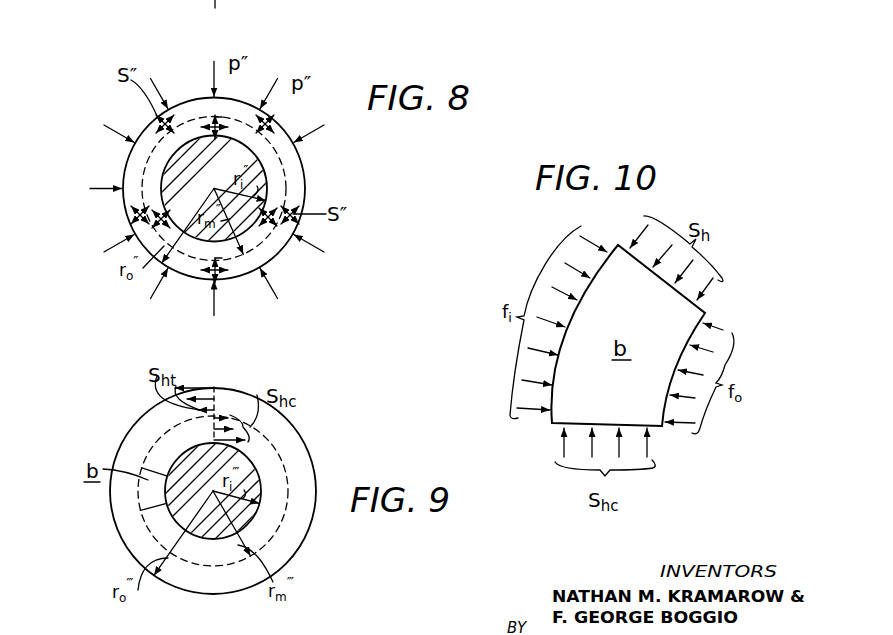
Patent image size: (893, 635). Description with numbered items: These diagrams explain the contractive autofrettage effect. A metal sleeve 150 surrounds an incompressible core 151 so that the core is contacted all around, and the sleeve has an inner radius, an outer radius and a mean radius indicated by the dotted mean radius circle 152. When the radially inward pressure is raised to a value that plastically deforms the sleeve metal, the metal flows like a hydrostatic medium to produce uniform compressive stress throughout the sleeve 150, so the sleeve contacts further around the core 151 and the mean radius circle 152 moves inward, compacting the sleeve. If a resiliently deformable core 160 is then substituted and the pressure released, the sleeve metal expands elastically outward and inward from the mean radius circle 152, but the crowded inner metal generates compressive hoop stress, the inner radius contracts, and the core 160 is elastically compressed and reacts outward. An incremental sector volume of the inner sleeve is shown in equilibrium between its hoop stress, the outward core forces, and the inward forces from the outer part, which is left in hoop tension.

In FIG. 8, the metal sleeve 150 is at (303, 162).
In FIG. 9, the metal sleeve 150 is at (125, 538).
In FIG. 8, the incompressible core 151 is at (183, 175).
In FIG. 8, the mean radius circle 152 is at (286, 179).
In FIG. 9, the mean radius circle 152 is at (302, 546).
In FIG. 9, the resiliently deformable core 160 is at (250, 484).